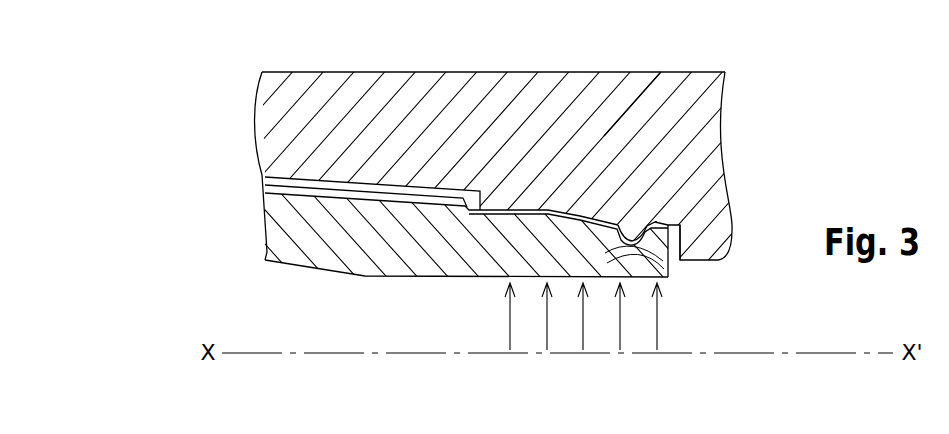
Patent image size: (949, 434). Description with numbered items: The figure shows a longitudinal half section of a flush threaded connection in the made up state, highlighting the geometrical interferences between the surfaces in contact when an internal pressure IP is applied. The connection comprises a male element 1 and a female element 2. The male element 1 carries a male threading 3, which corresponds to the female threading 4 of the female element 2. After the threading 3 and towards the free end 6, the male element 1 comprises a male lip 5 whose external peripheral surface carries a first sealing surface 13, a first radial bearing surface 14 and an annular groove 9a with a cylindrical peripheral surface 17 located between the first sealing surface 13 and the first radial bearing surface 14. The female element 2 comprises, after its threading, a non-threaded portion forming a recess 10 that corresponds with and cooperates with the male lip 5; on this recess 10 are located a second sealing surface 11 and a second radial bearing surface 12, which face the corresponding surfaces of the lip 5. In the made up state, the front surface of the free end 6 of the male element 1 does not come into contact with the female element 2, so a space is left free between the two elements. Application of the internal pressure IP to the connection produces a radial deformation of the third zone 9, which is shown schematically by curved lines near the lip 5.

The male element 1 is at (270, 230).
The female element 2 is at (720, 133).
The male threading 3 is at (371, 200).
The female threading 4 is at (360, 180).
The male lip 5 is at (471, 250).
The free end 6 is at (673, 262).
The third zone 9 is at (635, 230).
The annular groove 9a is at (642, 230).
The recess 10 is at (665, 153).
The second sealing surface 11 is at (578, 216).
The second radial bearing surface 12 is at (673, 227).
The first sealing surface 13 is at (600, 219).
The first radial bearing surface 14 is at (657, 222).
The cylindrical peripheral surface 17 is at (635, 246).
The internal pressure IP is at (596, 316).